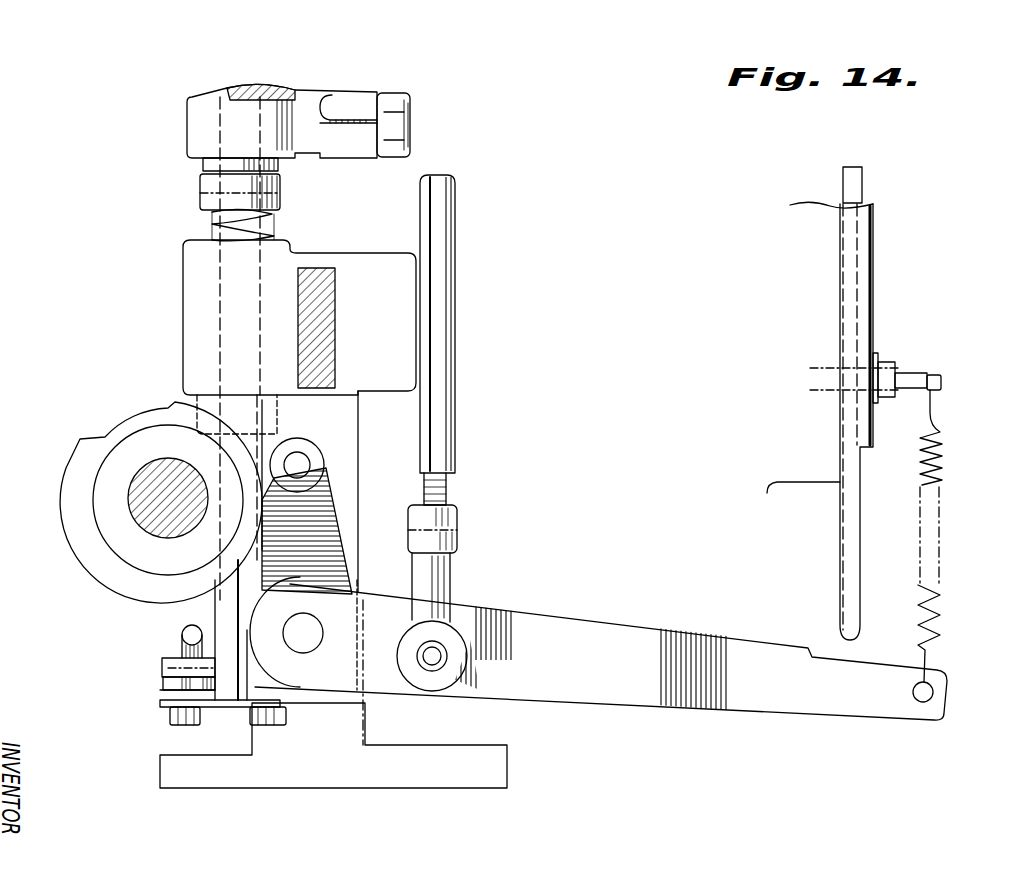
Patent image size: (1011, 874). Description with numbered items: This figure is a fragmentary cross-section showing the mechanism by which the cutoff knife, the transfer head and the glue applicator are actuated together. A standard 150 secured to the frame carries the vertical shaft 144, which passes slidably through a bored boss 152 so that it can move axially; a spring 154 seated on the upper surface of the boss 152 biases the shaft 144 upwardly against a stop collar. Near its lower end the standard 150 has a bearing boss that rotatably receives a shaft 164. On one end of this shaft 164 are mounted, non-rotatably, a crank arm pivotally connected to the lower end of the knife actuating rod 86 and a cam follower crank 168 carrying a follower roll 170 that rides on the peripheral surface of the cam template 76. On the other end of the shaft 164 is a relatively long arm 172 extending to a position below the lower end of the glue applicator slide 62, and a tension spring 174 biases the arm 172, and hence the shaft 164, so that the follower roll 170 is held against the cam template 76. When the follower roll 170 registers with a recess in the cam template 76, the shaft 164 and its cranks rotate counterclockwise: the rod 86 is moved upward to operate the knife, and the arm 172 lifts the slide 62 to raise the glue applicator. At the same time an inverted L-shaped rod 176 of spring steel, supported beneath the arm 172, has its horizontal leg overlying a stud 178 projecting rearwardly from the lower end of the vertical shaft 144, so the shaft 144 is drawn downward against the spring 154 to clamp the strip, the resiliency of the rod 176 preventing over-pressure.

The vertically reciprocable slide 62 is at (851, 534).
The cam template 76 is at (63, 490).
The rod 86 is at (445, 346).
The vertical shaft 144 is at (215, 612).
The standard 150 is at (363, 722).
The bored boss 152 is at (185, 315).
The spring 154 is at (275, 234).
The shaft 164 is at (312, 640).
The cam follower crank 168 is at (330, 477).
The follower roll 170 is at (296, 482).
The arm 172 is at (601, 652).
The tension spring 174 is at (944, 469).
The inverted L-shaped rod 176 is at (182, 635).
The stud 178 is at (162, 672).